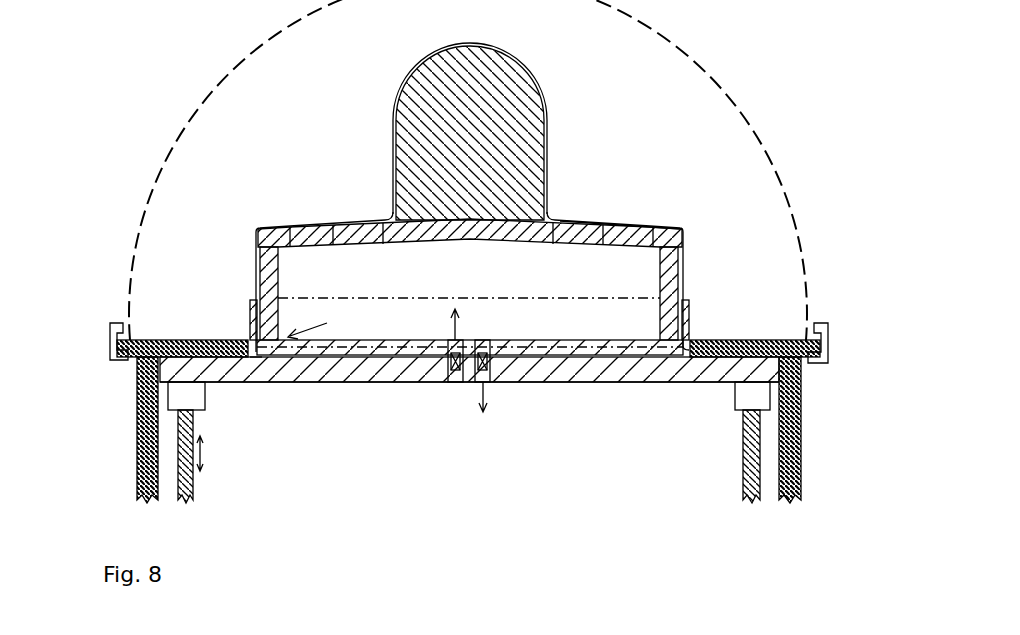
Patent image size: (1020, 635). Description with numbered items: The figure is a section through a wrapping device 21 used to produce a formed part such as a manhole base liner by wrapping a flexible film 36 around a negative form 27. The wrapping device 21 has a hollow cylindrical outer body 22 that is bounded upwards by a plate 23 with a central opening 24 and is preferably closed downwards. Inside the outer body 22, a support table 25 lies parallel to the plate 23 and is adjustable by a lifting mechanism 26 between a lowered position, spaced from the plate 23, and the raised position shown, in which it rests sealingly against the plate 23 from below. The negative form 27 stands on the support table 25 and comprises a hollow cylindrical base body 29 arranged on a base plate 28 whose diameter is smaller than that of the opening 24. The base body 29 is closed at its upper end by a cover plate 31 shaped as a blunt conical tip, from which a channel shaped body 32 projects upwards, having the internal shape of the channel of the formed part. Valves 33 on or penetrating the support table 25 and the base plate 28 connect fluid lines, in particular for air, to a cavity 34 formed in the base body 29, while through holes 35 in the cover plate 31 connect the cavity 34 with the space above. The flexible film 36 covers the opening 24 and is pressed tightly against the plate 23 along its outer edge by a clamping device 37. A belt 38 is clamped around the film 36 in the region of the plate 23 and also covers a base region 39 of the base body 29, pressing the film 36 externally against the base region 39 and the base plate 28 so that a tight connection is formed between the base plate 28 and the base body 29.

The wrapping device 21 is at (236, 87).
The outer body 22 is at (135, 445).
The plate 23 is at (190, 343).
The central opening 24 is at (256, 357).
The support table 25 is at (622, 375).
The lifting mechanism 26 is at (195, 487).
The negative form 27 is at (368, 211).
The base plate 28 is at (543, 352).
The base body 29 is at (684, 258).
The cover plate 31 is at (288, 228).
The channel shaped body 32 is at (502, 152).
The valves 33 is at (486, 389).
The cavity 34 is at (620, 283).
The through holes 35 is at (661, 229).
The flexible film 36 is at (257, 278).
The clamping device 37 is at (116, 358).
The belt 38 is at (690, 313).
The base region 39 is at (327, 323).